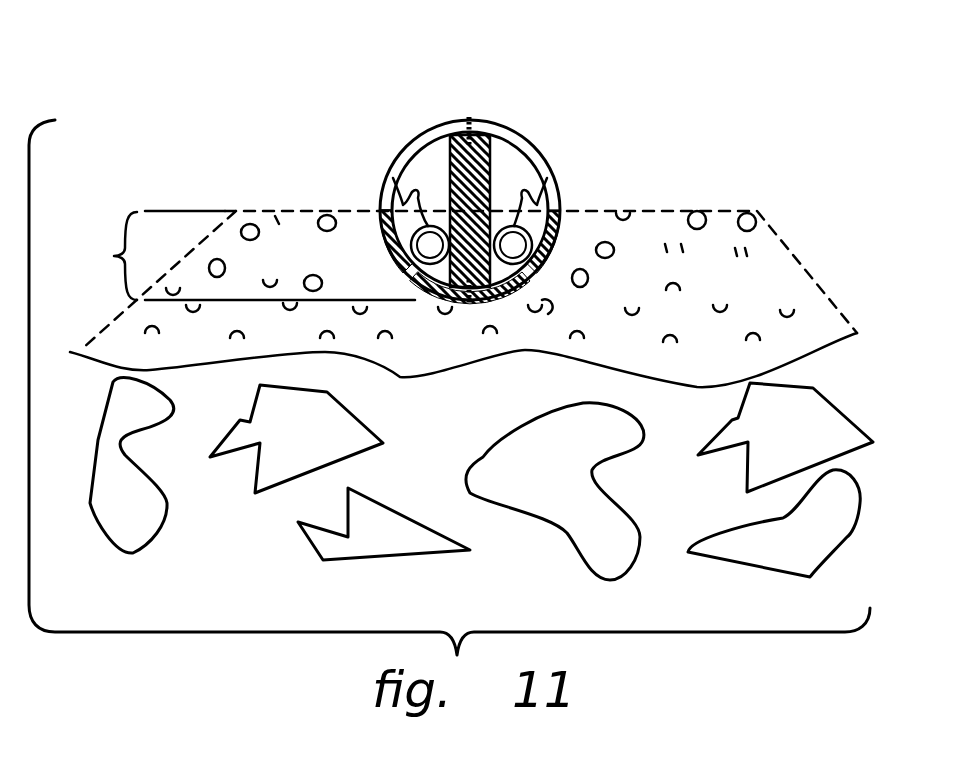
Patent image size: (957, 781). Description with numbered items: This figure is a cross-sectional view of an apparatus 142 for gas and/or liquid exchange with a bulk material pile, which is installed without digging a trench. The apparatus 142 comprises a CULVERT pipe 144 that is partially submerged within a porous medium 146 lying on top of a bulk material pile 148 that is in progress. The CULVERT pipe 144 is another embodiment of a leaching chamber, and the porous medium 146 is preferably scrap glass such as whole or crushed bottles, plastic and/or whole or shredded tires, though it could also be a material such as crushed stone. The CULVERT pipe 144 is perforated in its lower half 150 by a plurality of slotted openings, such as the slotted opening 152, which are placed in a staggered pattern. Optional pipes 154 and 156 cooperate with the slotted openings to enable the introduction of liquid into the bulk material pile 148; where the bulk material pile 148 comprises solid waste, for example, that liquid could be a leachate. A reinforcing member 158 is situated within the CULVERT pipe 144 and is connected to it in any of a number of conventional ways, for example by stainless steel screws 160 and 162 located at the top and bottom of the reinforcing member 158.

The apparatus 142 is at (752, 131).
The CULVERT pipe 144 is at (533, 143).
The porous medium 146 is at (718, 378).
The bulk material pile 148 is at (452, 472).
The lower half 150 is at (232, 255).
The slotted opening 152 is at (382, 247).
The pipe 154 is at (400, 188).
The pipe 156 is at (546, 182).
The reinforcing member 158 is at (447, 152).
The stainless steel screw 160 is at (468, 118).
The stainless steel screw 162 is at (469, 302).